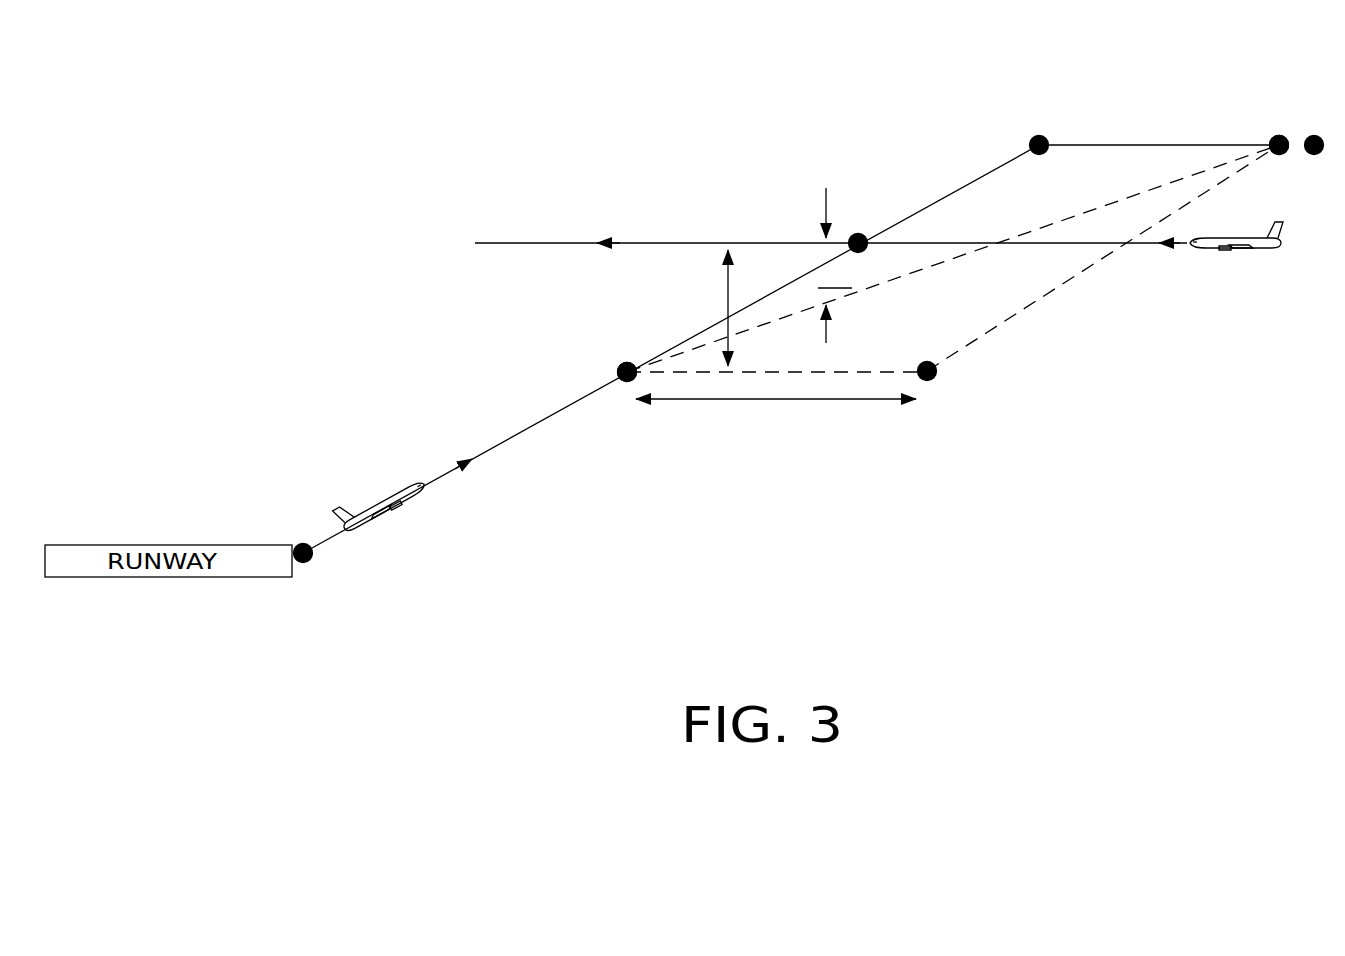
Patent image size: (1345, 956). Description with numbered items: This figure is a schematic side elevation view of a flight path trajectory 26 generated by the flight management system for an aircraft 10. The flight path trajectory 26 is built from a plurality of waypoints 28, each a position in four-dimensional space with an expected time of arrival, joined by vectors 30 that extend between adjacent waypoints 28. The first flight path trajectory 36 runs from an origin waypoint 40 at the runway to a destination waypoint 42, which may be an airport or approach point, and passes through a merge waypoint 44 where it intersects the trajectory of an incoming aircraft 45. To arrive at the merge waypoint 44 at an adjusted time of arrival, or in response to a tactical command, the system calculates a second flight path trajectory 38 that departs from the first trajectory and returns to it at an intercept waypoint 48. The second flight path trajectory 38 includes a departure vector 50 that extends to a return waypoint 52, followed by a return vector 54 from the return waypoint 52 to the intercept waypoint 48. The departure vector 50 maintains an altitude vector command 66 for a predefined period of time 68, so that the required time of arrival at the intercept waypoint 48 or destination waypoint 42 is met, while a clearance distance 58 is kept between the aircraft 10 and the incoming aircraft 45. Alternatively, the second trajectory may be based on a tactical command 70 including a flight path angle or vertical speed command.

The aircraft 10 is at (395, 497).
The flight path trajectory 26 is at (774, 98).
The waypoints 28 is at (857, 233).
The vectors 30 is at (525, 432).
The first flight path trajectory 36 is at (668, 318).
The second flight path trajectory 38 is at (1030, 347).
The origin waypoint 40 is at (311, 561).
The destination waypoint 42 is at (1313, 135).
The merge waypoint 44 is at (625, 383).
The incoming aircraft 45 is at (1215, 250).
The intercept waypoint 48 is at (1280, 155).
The departure vector 50 is at (760, 372).
The return waypoint 52 is at (934, 379).
The return vector 54 is at (1050, 293).
The clearance distance 58 is at (826, 208).
The altitude vector command 66 is at (840, 372).
The predefined period of time 68 is at (773, 400).
The tactical command 70 is at (1066, 214).